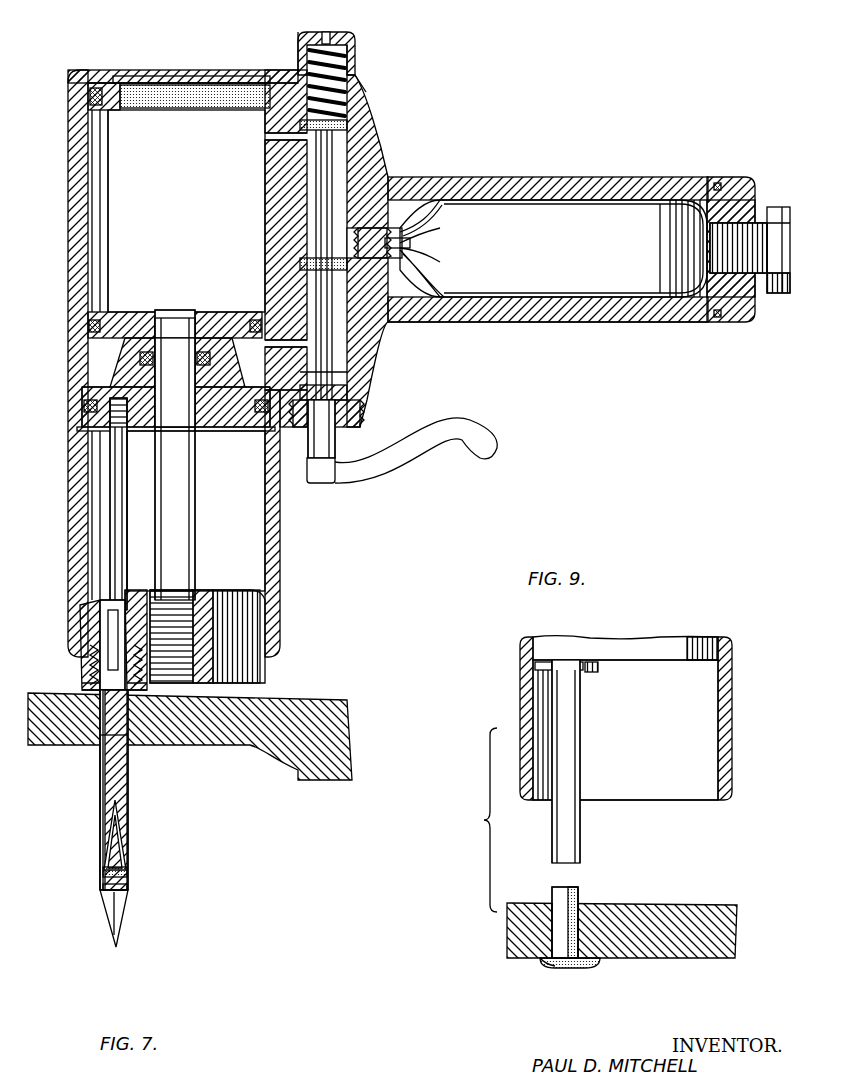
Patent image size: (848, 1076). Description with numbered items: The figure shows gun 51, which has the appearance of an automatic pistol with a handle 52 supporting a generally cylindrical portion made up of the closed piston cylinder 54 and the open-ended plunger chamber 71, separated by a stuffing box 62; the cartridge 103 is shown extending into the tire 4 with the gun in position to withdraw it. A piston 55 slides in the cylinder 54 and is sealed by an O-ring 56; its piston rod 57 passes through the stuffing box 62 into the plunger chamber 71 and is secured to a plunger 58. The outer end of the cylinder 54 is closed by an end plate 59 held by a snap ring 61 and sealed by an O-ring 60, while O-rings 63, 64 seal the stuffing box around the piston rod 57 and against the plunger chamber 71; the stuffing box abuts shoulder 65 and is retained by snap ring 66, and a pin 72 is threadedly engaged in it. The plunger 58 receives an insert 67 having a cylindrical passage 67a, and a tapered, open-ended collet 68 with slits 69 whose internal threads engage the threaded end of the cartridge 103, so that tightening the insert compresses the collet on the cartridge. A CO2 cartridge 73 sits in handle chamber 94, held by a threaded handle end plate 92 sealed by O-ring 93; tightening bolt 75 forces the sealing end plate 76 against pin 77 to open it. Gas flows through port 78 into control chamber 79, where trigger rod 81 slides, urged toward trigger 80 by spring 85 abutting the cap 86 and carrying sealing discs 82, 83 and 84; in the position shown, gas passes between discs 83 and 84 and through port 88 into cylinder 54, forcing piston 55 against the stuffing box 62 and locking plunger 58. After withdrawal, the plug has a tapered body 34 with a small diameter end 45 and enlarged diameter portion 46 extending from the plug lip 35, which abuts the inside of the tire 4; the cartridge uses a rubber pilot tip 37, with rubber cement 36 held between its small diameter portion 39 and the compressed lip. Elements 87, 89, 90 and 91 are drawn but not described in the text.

In FIG. 7, the tire 4 is at (335, 733).
In FIG. 9, the tire 4 is at (700, 908).
In FIG. 7, the tapered body 34 is at (115, 766).
In FIG. 9, the tapered body 34 is at (555, 935).
In FIG. 7, the plug lip 35 is at (124, 840).
In FIG. 9, the plug lip 35 is at (542, 963).
In FIG. 7, the rubber cement 36 is at (92, 738).
In FIG. 9, the rubber cement 36 is at (545, 905).
In FIG. 7, the rubber pilot tip 37 is at (120, 928).
In FIG. 7, the small diameter portion 39 is at (118, 888).
In FIG. 9, the small diameter end 45 is at (575, 890).
In FIG. 9, the enlarged diameter portion 46 is at (580, 965).
In FIG. 7, the gun 51 is at (90, 70).
In FIG. 9, the gun 51 is at (734, 722).
In FIG. 7, the handle 52 is at (563, 178).
In FIG. 7, the piston cylinder 54 is at (186, 211).
In FIG. 7, the piston 55 is at (130, 318).
In FIG. 7, the O-ring 56 is at (88, 325).
In FIG. 7, the piston rod 57 is at (172, 500).
In FIG. 7, the plunger 58 is at (252, 618).
In FIG. 9, the plunger 58 is at (672, 640).
In FIG. 7, the end plate 59 is at (108, 92).
In FIG. 7, the O-ring 60 is at (185, 95).
In FIG. 7, the snap ring 61 is at (237, 80).
In FIG. 7, the stuffing box 62 is at (236, 410).
In FIG. 7, the O-ring 63 is at (140, 358).
In FIG. 7, the O-ring 64 is at (84, 406).
In FIG. 7, the shoulder 65 is at (84, 390).
In FIG. 7, the snap ring 66 is at (78, 430).
In FIG. 7, the insert 67 is at (86, 686).
In FIG. 9, the insert 67 is at (595, 670).
In FIG. 7, the cylindrical passage 67a is at (92, 664).
In FIG. 7, the collet 68 is at (96, 616).
In FIG. 7, the slits 69 is at (113, 632).
In FIG. 7, the plunger chamber 71 is at (196, 511).
In FIG. 9, the plunger chamber 71 is at (625, 730).
In FIG. 7, the pin 72 is at (112, 525).
In FIG. 7, the CO2 cartridge 73 is at (553, 248).
In FIG. 7, the bolt 75 is at (778, 208).
In FIG. 7, the sealing end plate 76 is at (403, 240).
In FIG. 7, the pin 77 is at (405, 252).
In FIG. 7, the port 78 is at (365, 228).
In FIG. 7, the control chamber 79 is at (340, 387).
In FIG. 7, the trigger 80 is at (468, 437).
In FIG. 7, the trigger rod 81 is at (322, 440).
In FIG. 7, the sealing disc 82 is at (358, 403).
In FIG. 7, the sealing disc 83 is at (300, 263).
In FIG. 7, the sealing disc 84 is at (347, 125).
In FIG. 7, the spring 85 is at (355, 50).
In FIG. 7, the cap 86 is at (300, 30).
In FIG. 7, the vent hole 87 is at (326, 32).
In FIG. 7, the port 88 is at (288, 140).
In FIG. 7, the passage 89 is at (285, 345).
In FIG. 7, the valve bore 90 is at (370, 108).
In FIG. 7, the seat 91 is at (350, 373).
In FIG. 7, the handle end plate 92 is at (735, 178).
In FIG. 7, the O-ring 93 is at (716, 183).
In FIG. 7, the handle chamber 94 is at (430, 293).
In FIG. 7, the cartridge 103 is at (100, 818).
In FIG. 9, the cartridge 103 is at (582, 760).